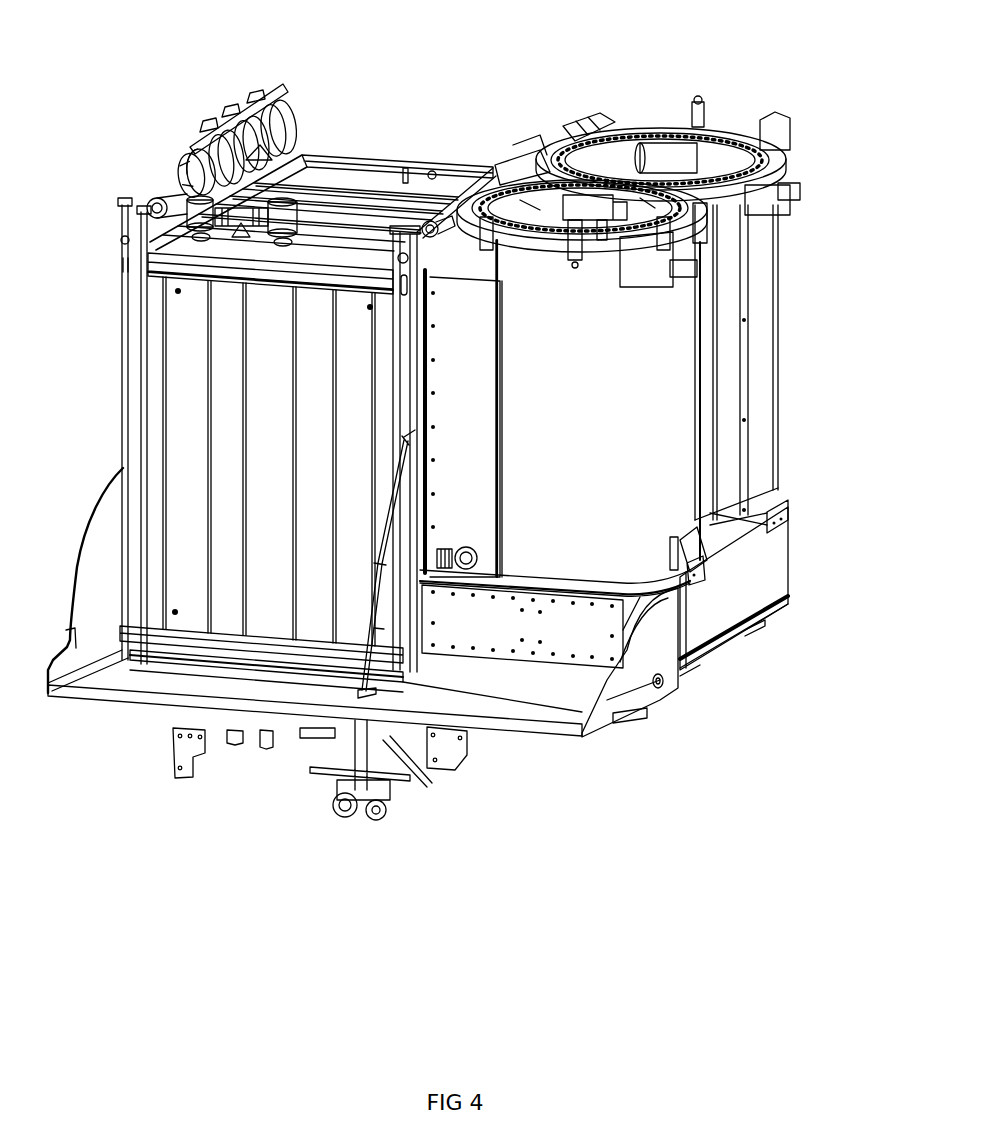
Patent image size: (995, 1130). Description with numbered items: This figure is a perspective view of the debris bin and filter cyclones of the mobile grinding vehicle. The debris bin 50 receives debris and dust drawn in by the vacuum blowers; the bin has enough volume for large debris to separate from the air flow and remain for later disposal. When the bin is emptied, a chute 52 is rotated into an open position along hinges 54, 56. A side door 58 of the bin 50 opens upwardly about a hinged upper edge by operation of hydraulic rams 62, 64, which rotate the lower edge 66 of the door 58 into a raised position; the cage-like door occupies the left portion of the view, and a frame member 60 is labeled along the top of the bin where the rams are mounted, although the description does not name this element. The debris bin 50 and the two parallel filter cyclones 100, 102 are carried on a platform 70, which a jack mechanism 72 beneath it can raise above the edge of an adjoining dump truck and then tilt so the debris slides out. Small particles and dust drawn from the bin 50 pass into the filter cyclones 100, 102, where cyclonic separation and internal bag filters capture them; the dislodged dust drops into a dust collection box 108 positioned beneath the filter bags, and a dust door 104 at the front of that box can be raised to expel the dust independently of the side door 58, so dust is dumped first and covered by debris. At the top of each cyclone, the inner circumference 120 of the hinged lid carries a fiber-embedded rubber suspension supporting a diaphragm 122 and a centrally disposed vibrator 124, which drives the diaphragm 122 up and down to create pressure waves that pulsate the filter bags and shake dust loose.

The debris bin 50 is at (380, 158).
The chute 52 is at (600, 714).
The hinge 54 is at (662, 683).
The hinge 56 is at (108, 667).
The side door 58 is at (270, 603).
The roof frame 60 is at (327, 253).
The hydraulic ram 62 is at (180, 198).
The hydraulic ram 64 is at (447, 225).
The lower edge 66 is at (215, 663).
The platform 70 is at (742, 653).
The jack mechanism 72 is at (408, 793).
The filter cyclone 100 is at (673, 348).
The filter cyclone 102 is at (758, 202).
The dust door 104 is at (580, 642).
The dust collection box 108 is at (742, 579).
The inner circumference 120 is at (575, 120).
The diaphragm 122 is at (602, 152).
The vibrator 124 is at (697, 117).